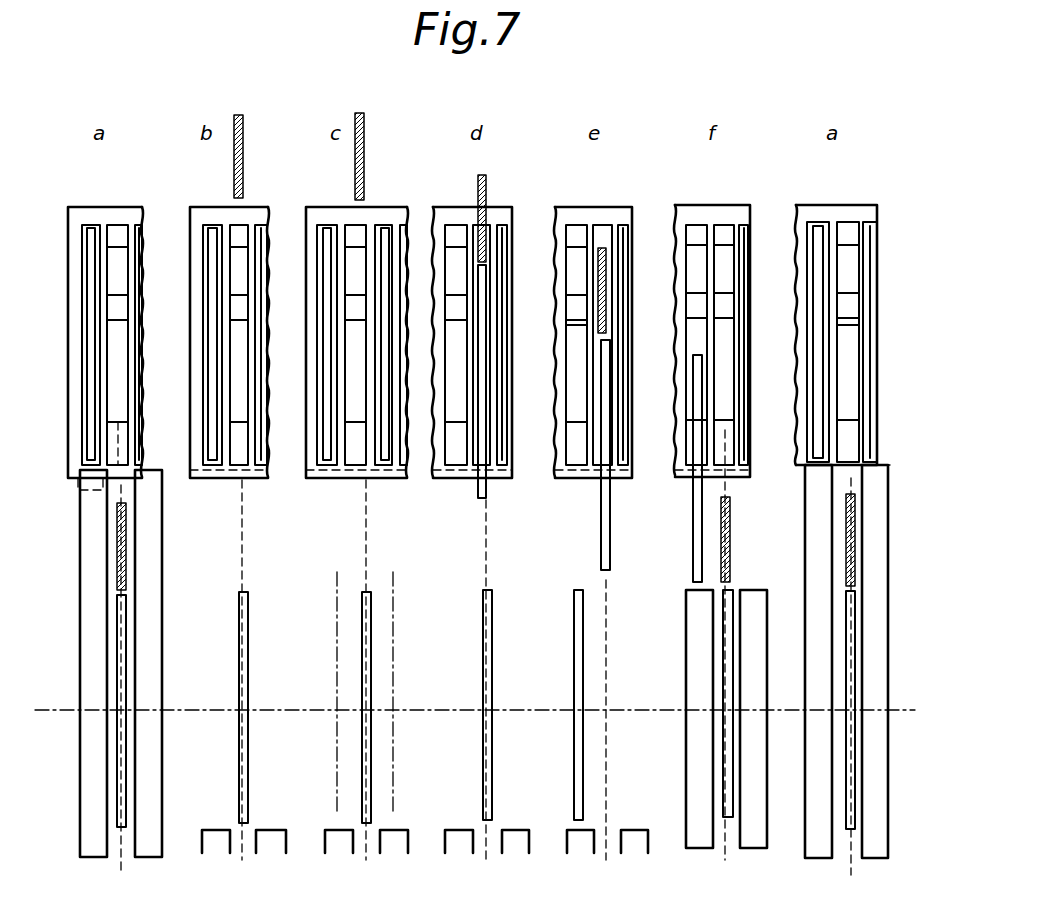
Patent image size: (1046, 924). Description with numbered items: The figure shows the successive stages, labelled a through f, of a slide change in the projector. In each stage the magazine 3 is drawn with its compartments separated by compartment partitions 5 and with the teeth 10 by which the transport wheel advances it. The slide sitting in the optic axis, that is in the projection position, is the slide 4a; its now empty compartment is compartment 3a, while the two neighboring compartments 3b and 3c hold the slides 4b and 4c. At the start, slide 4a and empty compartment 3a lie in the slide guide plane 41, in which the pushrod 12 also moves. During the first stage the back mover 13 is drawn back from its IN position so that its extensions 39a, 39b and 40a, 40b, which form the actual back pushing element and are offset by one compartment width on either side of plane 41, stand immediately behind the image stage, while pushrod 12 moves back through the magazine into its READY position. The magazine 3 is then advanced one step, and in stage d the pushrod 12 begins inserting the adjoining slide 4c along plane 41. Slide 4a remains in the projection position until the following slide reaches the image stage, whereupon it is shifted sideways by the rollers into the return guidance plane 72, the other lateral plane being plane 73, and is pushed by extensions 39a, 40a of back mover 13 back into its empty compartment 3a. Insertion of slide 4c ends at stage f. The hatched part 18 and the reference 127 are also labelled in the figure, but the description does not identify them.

The magazine 3 is at (104, 225).
The empty compartment 3a is at (118, 236).
The neighboring compartment 3b is at (140, 230).
The neighboring compartment 3c is at (402, 272).
The slide in projection position 4a is at (122, 650).
The slide 4b is at (90, 232).
The adjoining slide 4c is at (142, 382).
The compartment partitions 5 is at (125, 410).
The teeth 10 is at (72, 480).
The pushrod 12 is at (121, 546).
The back mover 13 is at (155, 808).
The hatched insert piece 18 is at (122, 560).
The extension 39a is at (100, 860).
The extension 39b is at (140, 860).
The extension 40a is at (457, 899).
The extension 40b is at (518, 899).
The slide guide plane 41 is at (122, 497).
The return guidance plane 72 is at (337, 597).
The plane 73 is at (393, 597).
The transverse axis 127 is at (400, 712).